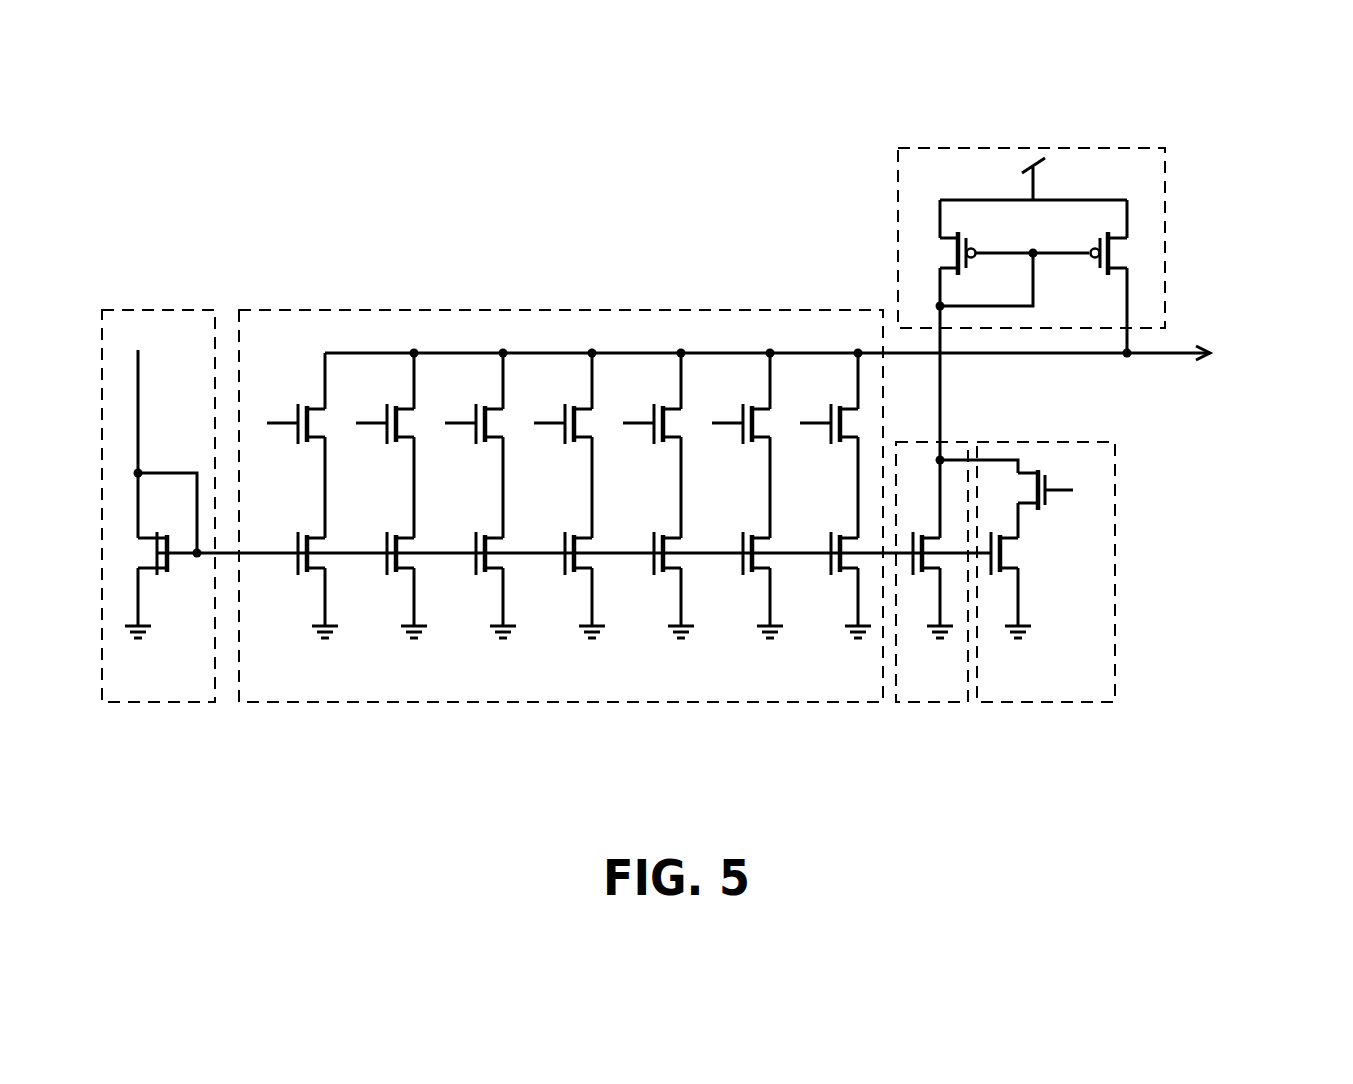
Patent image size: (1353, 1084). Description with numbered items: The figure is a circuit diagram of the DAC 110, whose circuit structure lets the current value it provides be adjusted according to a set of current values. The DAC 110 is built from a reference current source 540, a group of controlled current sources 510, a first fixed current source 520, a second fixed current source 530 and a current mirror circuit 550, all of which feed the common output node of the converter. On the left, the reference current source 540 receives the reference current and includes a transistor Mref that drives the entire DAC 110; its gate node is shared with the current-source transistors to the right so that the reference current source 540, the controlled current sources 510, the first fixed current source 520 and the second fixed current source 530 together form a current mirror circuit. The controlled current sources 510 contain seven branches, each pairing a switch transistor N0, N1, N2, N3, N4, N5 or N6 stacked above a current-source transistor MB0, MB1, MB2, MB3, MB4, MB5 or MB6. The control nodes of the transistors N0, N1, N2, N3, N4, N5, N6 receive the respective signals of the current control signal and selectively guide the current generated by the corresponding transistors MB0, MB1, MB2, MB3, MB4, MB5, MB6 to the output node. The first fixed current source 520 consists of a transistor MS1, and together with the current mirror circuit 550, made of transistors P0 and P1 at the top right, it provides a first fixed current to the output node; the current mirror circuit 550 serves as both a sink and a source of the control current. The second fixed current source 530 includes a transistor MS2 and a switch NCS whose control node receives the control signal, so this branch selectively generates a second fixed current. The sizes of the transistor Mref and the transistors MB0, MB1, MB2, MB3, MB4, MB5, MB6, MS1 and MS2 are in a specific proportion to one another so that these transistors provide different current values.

The DAC 110 is at (700, 441).
The controlled current sources 510 is at (561, 550).
The first fixed current source 520 is at (932, 548).
The second fixed current source 530 is at (1027, 616).
The reference current source 540 is at (158, 550).
The current mirror circuit 550 is at (1031, 223).
The transistor Mref is at (168, 577).
The transistor MB0 is at (300, 576).
The transistor MB1 is at (389, 576).
The transistor MB2 is at (478, 576).
The transistor MB3 is at (567, 576).
The transistor MB4 is at (656, 576).
The transistor MB5 is at (745, 576).
The transistor MB6 is at (833, 576).
The transistor N0 is at (301, 445).
The transistor N1 is at (390, 445).
The transistor N2 is at (479, 445).
The transistor N3 is at (568, 445).
The transistor N4 is at (657, 445).
The transistor N5 is at (746, 445).
The transistor N6 is at (834, 445).
The transistor MS1 is at (915, 578).
The transistor MS2 is at (993, 578).
The switch NCS is at (1030, 512).
The transistor P0 is at (998, 253).
The transistor P1 is at (1125, 276).